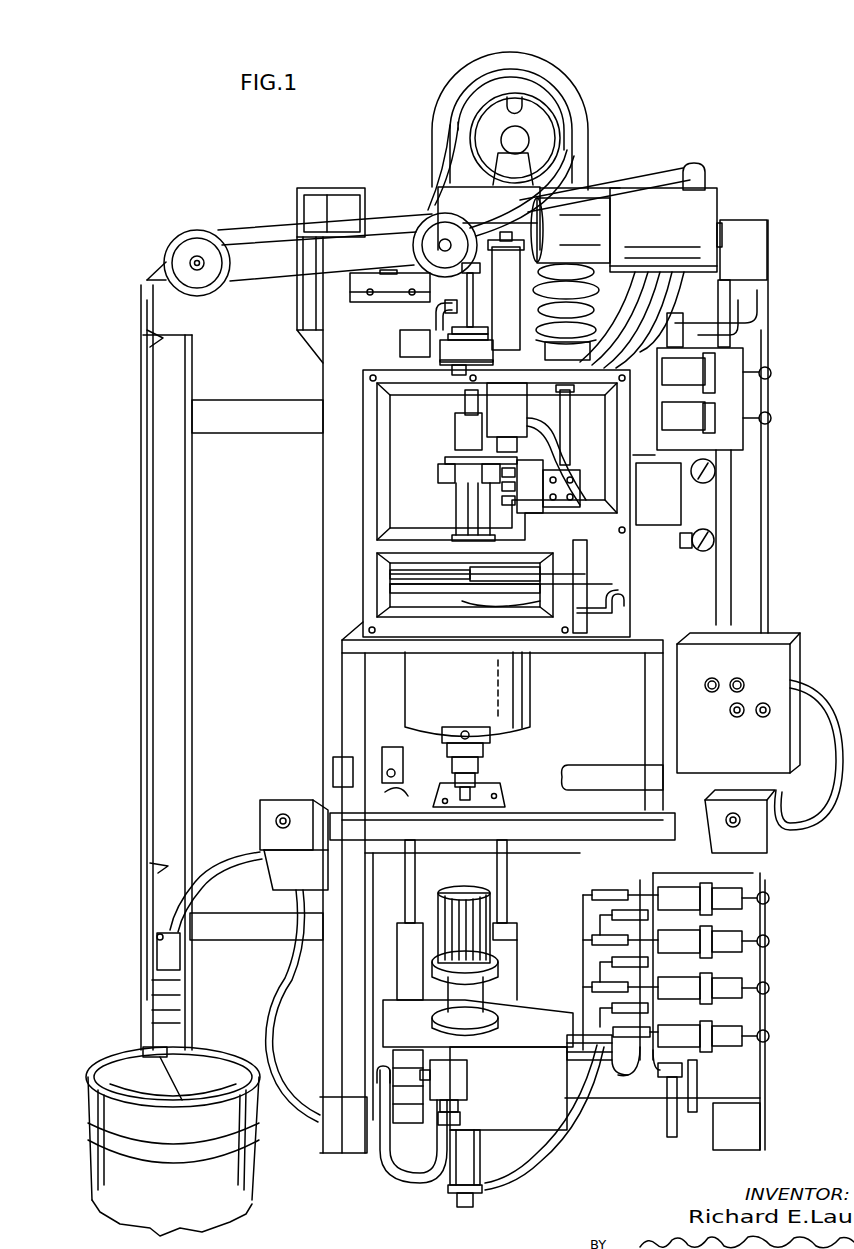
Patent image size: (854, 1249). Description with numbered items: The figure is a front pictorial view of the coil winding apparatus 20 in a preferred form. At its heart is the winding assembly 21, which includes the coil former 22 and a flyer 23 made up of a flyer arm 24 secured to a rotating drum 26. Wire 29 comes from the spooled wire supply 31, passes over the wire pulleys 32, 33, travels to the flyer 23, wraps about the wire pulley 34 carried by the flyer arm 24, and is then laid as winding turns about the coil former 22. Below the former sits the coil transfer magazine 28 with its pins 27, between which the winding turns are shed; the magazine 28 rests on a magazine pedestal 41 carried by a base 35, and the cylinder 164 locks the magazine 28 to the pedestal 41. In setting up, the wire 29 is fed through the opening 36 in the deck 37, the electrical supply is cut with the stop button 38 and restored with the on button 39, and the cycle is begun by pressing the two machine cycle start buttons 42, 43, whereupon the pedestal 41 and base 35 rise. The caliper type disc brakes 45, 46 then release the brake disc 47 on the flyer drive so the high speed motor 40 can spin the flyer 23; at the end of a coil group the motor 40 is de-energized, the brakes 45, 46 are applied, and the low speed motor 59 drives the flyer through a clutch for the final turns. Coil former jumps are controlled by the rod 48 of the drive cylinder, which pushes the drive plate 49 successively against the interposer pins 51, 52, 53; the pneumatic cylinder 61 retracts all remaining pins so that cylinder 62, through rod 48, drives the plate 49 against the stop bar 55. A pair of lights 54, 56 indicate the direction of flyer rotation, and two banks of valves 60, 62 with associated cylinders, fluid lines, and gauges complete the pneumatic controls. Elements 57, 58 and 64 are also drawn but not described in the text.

The apparatus 20 is at (272, 215).
The winding assembly 21 is at (540, 704).
The coil former 22 is at (485, 770).
The flyer 23 is at (472, 679).
The flyer arm 24 is at (397, 686).
The rotating drum 26 is at (530, 678).
The pins 27 is at (452, 892).
The coil transfer magazine 28 is at (497, 951).
The wire 29 is at (236, 228).
The spooled wire supply 31 is at (100, 1068).
The wire pulley 32 is at (210, 292).
The wire pulley 33 is at (412, 243).
The wire pulley 34 is at (403, 775).
The base 35 is at (519, 1088).
The opening 36 is at (500, 790).
The deck 37 is at (554, 800).
The stop button 38 is at (737, 678).
The electricity on button 39 is at (712, 678).
The high speed motor 40 is at (548, 130).
The magazine pedestal 41 is at (478, 1005).
The machine cycle start button 42 is at (283, 813).
The machine cycle start button 43 is at (742, 824).
The caliper type disc brake 45 is at (392, 576).
The caliper type disc brake 46 is at (545, 578).
The brake disc 47 is at (600, 588).
The rod 48 is at (512, 452).
The drive plate 49 is at (470, 457).
The interposer pin 51 is at (531, 486).
The interposer pin 52 is at (514, 477).
The interposer pin 53 is at (514, 491).
The light 54 is at (735, 717).
The stop bar 55 is at (514, 505).
The light 56 is at (763, 717).
The bracket 57 is at (402, 346).
The switch 58 is at (455, 376).
The low speed motor 59 is at (705, 203).
The bank of valves 60 is at (748, 397).
The pneumatic cylinder 61 is at (572, 478).
The cylinder 62 is at (514, 299).
The cap 64 is at (492, 734).
The cylinder 164 is at (482, 1165).